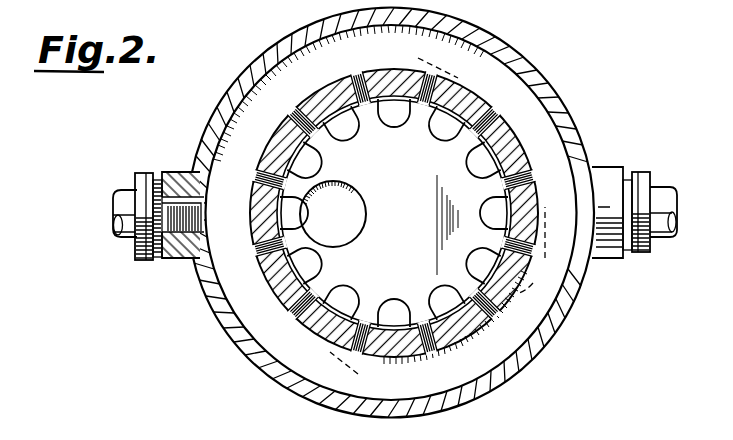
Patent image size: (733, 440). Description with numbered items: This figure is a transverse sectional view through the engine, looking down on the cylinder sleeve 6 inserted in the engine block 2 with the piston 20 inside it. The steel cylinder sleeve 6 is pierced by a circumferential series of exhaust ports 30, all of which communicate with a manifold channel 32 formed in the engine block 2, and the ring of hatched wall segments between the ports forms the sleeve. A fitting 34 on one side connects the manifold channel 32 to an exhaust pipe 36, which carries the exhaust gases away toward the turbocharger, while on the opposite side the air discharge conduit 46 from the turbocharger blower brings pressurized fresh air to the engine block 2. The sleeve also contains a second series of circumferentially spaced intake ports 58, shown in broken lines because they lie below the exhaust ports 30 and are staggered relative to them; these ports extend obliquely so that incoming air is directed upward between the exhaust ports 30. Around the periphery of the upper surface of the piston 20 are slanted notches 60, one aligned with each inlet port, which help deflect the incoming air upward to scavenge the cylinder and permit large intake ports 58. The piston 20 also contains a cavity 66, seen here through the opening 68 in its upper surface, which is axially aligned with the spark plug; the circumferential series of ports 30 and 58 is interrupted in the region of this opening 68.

The engine block 2 is at (392, 213).
The cylinder sleeve 6 is at (257, 177).
The piston 20 is at (435, 250).
The exhaust ports 30 is at (303, 115).
The manifold channel 32 is at (283, 356).
The fitting 34 is at (145, 184).
The exhaust pipe 36 is at (122, 242).
The air discharge conduit 46 is at (662, 187).
The intake ports 58 is at (445, 215).
The slanted notches 60 is at (482, 207).
The cavity 66 is at (343, 190).
The opening 68 is at (359, 222).